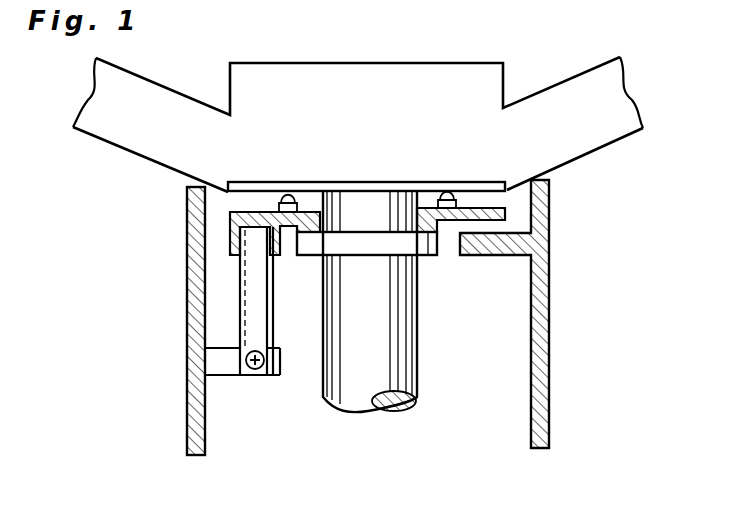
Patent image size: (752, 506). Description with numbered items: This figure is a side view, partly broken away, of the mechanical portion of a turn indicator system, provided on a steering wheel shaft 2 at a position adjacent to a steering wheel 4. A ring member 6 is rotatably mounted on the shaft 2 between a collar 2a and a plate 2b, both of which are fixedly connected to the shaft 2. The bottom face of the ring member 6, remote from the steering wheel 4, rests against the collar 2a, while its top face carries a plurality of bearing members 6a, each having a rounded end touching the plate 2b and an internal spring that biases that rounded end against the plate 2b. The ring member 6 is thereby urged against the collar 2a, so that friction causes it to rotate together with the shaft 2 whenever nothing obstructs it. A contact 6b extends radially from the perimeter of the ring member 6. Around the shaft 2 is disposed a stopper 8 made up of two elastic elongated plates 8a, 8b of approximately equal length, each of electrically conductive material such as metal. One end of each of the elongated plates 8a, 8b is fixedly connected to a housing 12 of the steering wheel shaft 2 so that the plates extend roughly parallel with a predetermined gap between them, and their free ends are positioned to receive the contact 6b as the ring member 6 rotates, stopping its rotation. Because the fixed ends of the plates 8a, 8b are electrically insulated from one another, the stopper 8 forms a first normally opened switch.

The steering wheel shaft 2 is at (417, 320).
The collar 2a is at (427, 257).
The plate 2b is at (420, 190).
The steering wheel 4 is at (585, 93).
The ring member 6 is at (505, 218).
The bearing members 6a is at (265, 195).
The contact 6b is at (237, 222).
The stopper 8 is at (140, 258).
The elastic elongated plate 8a is at (255, 303).
The elastic elongated plate 8b is at (278, 284).
The housing 12 is at (190, 373).